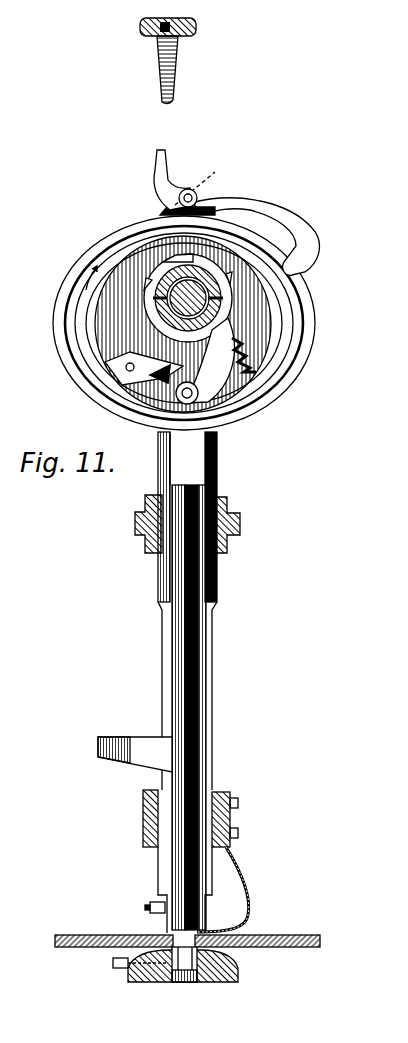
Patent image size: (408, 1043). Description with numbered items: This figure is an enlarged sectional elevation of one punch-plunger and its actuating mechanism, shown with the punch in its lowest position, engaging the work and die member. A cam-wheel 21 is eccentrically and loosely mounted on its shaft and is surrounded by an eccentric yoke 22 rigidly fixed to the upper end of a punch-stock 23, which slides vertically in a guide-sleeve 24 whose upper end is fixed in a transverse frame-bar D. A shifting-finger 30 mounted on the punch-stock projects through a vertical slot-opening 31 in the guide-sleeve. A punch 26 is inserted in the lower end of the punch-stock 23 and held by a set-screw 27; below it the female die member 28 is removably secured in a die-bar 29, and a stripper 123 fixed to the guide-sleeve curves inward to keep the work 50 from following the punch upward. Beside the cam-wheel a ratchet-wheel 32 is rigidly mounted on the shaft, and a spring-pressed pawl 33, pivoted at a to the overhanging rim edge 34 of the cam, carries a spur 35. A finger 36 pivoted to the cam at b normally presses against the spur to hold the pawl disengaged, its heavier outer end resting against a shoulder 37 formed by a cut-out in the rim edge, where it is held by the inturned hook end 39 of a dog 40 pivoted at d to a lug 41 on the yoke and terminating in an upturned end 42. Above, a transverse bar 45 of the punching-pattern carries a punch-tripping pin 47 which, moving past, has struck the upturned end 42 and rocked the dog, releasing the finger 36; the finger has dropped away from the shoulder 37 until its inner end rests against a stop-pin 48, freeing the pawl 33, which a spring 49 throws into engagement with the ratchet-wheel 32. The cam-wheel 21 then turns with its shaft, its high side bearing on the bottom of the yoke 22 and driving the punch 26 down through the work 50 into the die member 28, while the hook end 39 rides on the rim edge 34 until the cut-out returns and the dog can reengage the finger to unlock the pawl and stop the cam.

The transverse bar 45 is at (140, 27).
The punch-tripping pin 47 is at (168, 76).
The eccentric yoke 22 is at (90, 250).
The cam-wheel 21 is at (122, 298).
The pawl 33 is at (230, 330).
The overhanging rim edge 34 is at (253, 383).
The ratchet-wheel 32 is at (225, 299).
The finger 36 is at (163, 433).
The pawl pivot a is at (228, 400).
The spur 35 is at (147, 350).
The finger pivot b is at (127, 370).
The shoulder 37 is at (120, 391).
The stop-pin 48 is at (179, 367).
The spring 49 is at (258, 358).
The dog 40 is at (270, 208).
The inturned hook end 39 is at (300, 265).
The lug 41 is at (210, 203).
The upturned end 42 is at (155, 160).
The dog pivot d is at (190, 189).
The vertical slot-opening 31 is at (162, 643).
The punch-stock 23 is at (206, 584).
The guide-sleeve 24 is at (145, 535).
The transverse frame-bar D is at (240, 527).
The shifting-finger 30 is at (117, 740).
The punch 26 is at (173, 933).
The set-screw 27 is at (150, 906).
The stripper 123 is at (248, 893).
The work 50 is at (290, 937).
The female die member 28 is at (190, 977).
The die-bar 29 is at (240, 972).